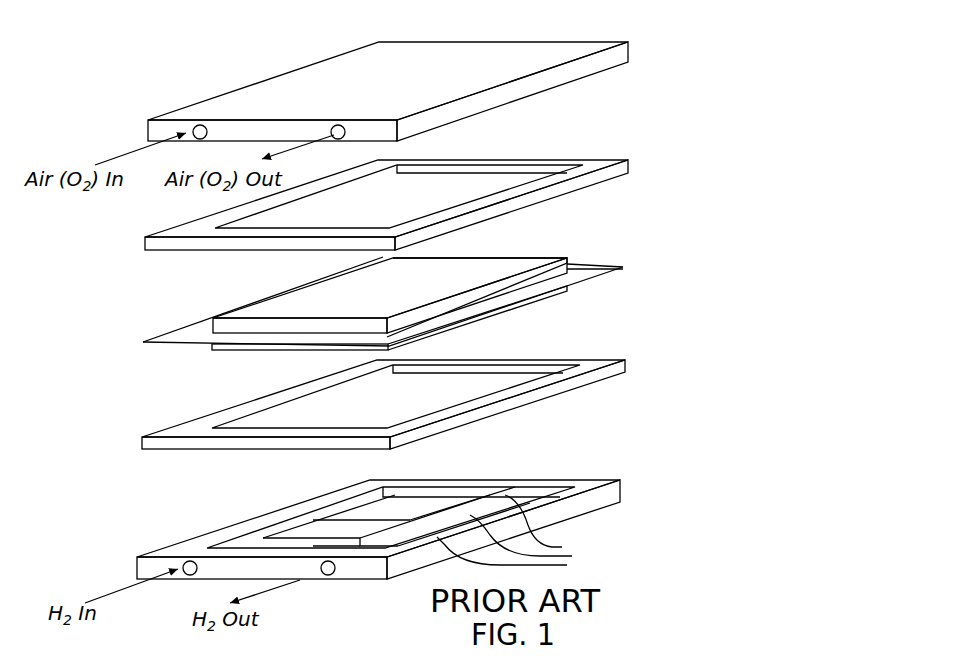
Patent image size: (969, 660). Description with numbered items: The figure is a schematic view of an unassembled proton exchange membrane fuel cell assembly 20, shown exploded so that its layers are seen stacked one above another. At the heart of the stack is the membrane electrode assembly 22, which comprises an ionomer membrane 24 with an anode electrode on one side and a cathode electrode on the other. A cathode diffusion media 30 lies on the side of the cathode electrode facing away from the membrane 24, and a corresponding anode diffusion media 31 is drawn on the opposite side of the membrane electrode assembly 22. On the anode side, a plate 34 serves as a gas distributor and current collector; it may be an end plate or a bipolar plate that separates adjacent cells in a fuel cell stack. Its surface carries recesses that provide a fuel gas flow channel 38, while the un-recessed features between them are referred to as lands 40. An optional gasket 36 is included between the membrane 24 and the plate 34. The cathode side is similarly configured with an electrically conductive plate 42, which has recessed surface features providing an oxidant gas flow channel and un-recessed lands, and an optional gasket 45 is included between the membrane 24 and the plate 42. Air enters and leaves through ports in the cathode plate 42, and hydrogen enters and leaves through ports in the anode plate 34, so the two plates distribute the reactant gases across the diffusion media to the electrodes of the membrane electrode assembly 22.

The fuel cell assembly 20 is at (152, 74).
The plate 42 is at (349, 70).
The gasket 45 is at (585, 166).
The membrane electrode assembly 22 is at (570, 262).
The ionomer membrane 24 is at (615, 266).
The cathode diffusion media 30 is at (257, 313).
The anode electrode 31 is at (230, 348).
The gasket 36 is at (585, 369).
The plate 34 is at (588, 486).
The fuel gas flow channel 38 is at (282, 522).
The lands 40 is at (522, 531).